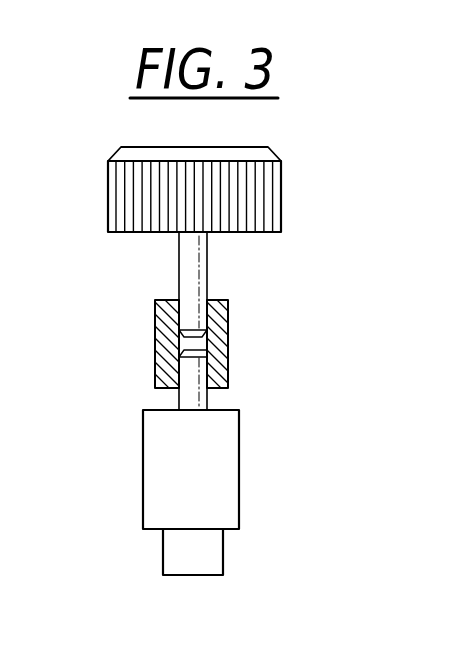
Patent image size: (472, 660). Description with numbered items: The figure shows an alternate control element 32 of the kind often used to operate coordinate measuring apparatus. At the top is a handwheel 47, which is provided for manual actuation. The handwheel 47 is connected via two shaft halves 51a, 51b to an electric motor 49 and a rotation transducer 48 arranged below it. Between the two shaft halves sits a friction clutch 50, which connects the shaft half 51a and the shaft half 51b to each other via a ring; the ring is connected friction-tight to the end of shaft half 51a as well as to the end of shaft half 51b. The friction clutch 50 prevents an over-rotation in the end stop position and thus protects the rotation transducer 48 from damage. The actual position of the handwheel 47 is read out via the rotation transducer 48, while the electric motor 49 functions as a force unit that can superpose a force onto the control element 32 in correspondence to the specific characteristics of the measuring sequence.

The control element 32 is at (308, 182).
The handwheel 47 is at (122, 202).
The rotation transducer 48 is at (177, 553).
The electric motor 49 is at (223, 467).
The friction clutch 50 is at (162, 347).
The shaft half 51a is at (193, 268).
The shaft half 51b is at (200, 402).